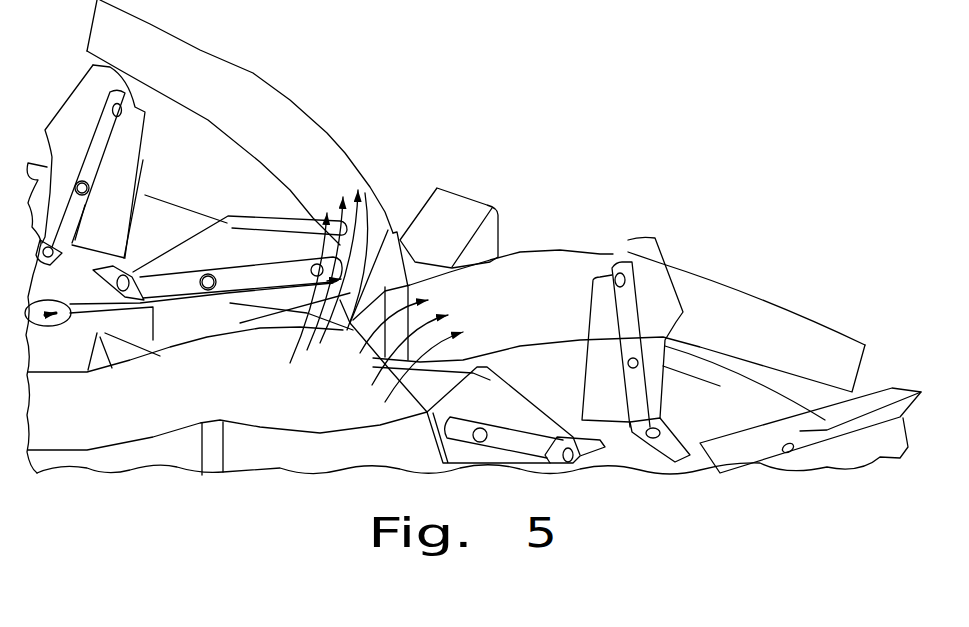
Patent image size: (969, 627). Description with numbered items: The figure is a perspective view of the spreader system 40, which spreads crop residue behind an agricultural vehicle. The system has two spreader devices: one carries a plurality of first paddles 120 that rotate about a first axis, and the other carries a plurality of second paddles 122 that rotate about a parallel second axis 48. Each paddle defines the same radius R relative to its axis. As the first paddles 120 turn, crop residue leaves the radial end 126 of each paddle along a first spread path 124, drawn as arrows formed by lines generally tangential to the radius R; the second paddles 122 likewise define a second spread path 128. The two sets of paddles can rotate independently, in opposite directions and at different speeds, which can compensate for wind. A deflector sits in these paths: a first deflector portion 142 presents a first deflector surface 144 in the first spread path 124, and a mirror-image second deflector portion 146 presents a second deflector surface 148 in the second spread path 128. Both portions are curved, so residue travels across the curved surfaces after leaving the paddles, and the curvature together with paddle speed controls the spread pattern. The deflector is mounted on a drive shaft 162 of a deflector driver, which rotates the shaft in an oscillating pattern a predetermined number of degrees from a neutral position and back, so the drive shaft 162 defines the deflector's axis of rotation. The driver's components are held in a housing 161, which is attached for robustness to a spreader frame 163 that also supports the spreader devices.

The spreader system 40 is at (637, 157).
The second axis 48 is at (45, 318).
The first paddles 120 is at (823, 427).
The second paddles 122 is at (233, 230).
The first spread path 124 is at (412, 320).
The radial end 126 is at (628, 262).
The second spread path 128 is at (333, 255).
The first deflector portion 142 is at (542, 252).
The first deflector surface 144 is at (548, 320).
The second deflector portion 146 is at (255, 72).
The second deflector surface 148 is at (312, 152).
The housing 161 is at (390, 233).
The drive shaft 162 is at (460, 210).
The spreader frame 163 is at (363, 337).
The radius R is at (221, 297).